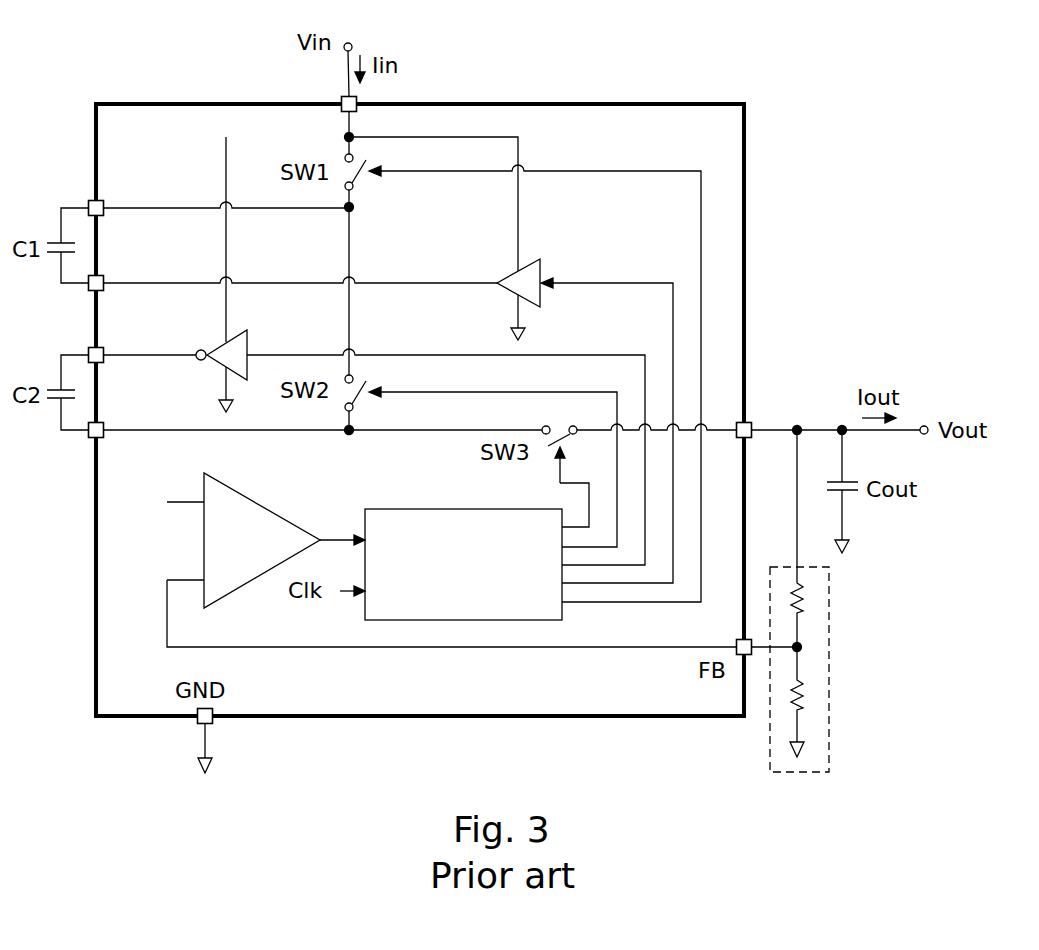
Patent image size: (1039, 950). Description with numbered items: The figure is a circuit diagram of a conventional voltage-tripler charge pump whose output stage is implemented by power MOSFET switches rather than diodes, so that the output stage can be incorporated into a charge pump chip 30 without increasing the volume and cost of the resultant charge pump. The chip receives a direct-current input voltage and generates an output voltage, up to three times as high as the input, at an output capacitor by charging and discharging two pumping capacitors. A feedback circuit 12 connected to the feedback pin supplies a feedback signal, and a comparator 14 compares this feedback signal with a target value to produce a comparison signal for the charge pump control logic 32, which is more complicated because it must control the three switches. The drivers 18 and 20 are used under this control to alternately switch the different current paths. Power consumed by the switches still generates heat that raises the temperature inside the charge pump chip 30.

The feedback circuit 12 is at (829, 645).
The comparator 14 is at (262, 505).
The driver 18 is at (510, 276).
The driver 20 is at (201, 361).
The charge pump chip 30 is at (745, 277).
The charge pump control logic 32 is at (462, 509).